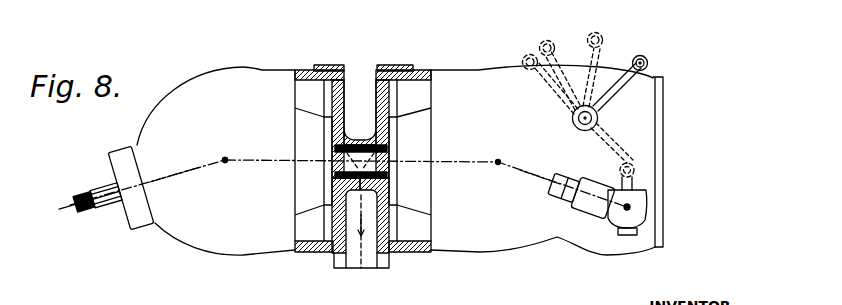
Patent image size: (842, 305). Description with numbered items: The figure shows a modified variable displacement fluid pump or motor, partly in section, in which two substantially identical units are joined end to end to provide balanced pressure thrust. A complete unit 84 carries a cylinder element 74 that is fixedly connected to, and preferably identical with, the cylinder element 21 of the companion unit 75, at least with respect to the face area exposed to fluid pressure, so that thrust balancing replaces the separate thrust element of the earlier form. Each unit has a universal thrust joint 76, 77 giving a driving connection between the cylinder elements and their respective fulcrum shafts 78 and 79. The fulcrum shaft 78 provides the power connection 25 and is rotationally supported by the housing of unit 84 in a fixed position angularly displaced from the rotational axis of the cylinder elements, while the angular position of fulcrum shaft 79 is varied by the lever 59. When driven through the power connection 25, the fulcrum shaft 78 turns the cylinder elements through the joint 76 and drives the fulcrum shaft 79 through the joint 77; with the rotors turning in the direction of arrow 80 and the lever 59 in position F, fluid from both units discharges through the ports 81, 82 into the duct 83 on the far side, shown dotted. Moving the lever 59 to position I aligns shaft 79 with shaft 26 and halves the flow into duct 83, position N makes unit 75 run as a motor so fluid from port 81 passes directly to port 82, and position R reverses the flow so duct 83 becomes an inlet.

The cylinder element 21 is at (420, 120).
The power connection 25 is at (111, 208).
The shaft 26 is at (361, 157).
The lever 59 is at (617, 88).
The cylinder element 74 is at (305, 122).
The unit 75 is at (455, 78).
The universal thrust joint 76 is at (224, 160).
The universal thrust joint 77 is at (499, 162).
The fulcrum shaft 78 is at (182, 173).
The fulcrum shaft 79 is at (536, 176).
The arrow 80 is at (570, 198).
The port 81 is at (345, 184).
The port 82 is at (390, 185).
The duct 83 is at (365, 257).
The unit 84 is at (202, 82).